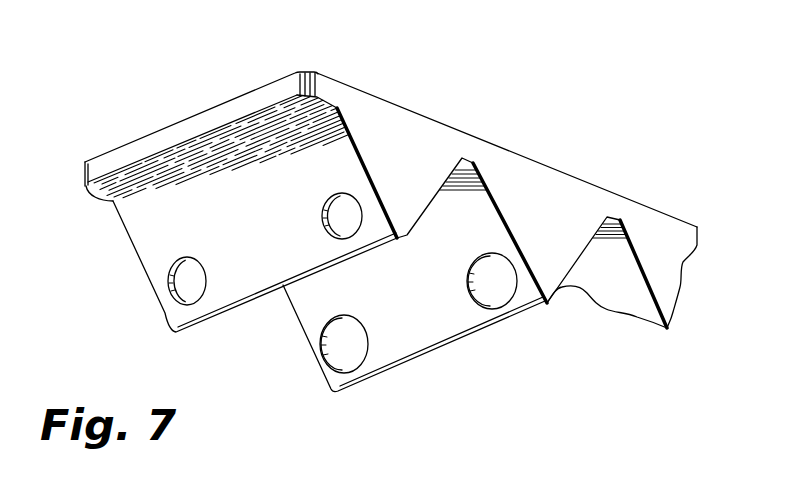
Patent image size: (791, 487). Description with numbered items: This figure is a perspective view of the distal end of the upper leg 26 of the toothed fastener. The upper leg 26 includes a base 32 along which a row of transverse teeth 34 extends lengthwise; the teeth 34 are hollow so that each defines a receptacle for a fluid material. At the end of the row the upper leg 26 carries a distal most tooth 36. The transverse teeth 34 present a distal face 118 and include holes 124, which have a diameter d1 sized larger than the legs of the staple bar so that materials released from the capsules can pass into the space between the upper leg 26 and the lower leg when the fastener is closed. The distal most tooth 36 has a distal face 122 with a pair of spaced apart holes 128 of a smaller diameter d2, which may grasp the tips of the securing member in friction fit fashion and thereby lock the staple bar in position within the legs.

The upper leg 26 is at (484, 110).
The base 32 is at (274, 88).
The transverse teeth 34 is at (443, 350).
The distal most tooth 36 is at (135, 218).
The distal face 118 is at (407, 345).
The distal face 122 is at (145, 248).
The holes 124 is at (338, 343).
The holes 128 is at (182, 287).